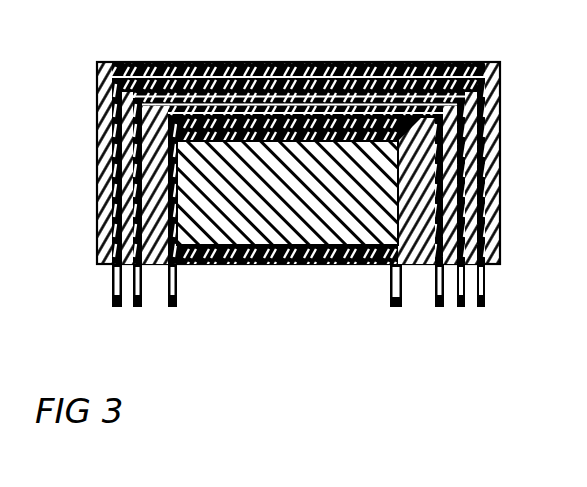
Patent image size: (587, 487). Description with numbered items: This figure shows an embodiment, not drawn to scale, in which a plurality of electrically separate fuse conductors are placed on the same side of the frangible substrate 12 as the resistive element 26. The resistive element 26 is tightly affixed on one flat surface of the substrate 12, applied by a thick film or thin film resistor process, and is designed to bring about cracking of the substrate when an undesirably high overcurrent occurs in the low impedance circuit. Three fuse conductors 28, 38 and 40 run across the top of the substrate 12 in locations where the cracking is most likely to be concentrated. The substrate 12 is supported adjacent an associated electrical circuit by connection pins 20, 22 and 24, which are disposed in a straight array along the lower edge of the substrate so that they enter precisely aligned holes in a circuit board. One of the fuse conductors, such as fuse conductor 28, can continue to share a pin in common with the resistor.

The frangible substrate 12 is at (100, 62).
The connection pin 20 is at (175, 307).
The connection pin 22 is at (397, 308).
The connection pin 24 is at (432, 286).
The resistive element 26 is at (268, 205).
The fuse conductor 28 is at (450, 190).
The fuse conductor 38 is at (462, 150).
The fuse conductor 40 is at (479, 121).